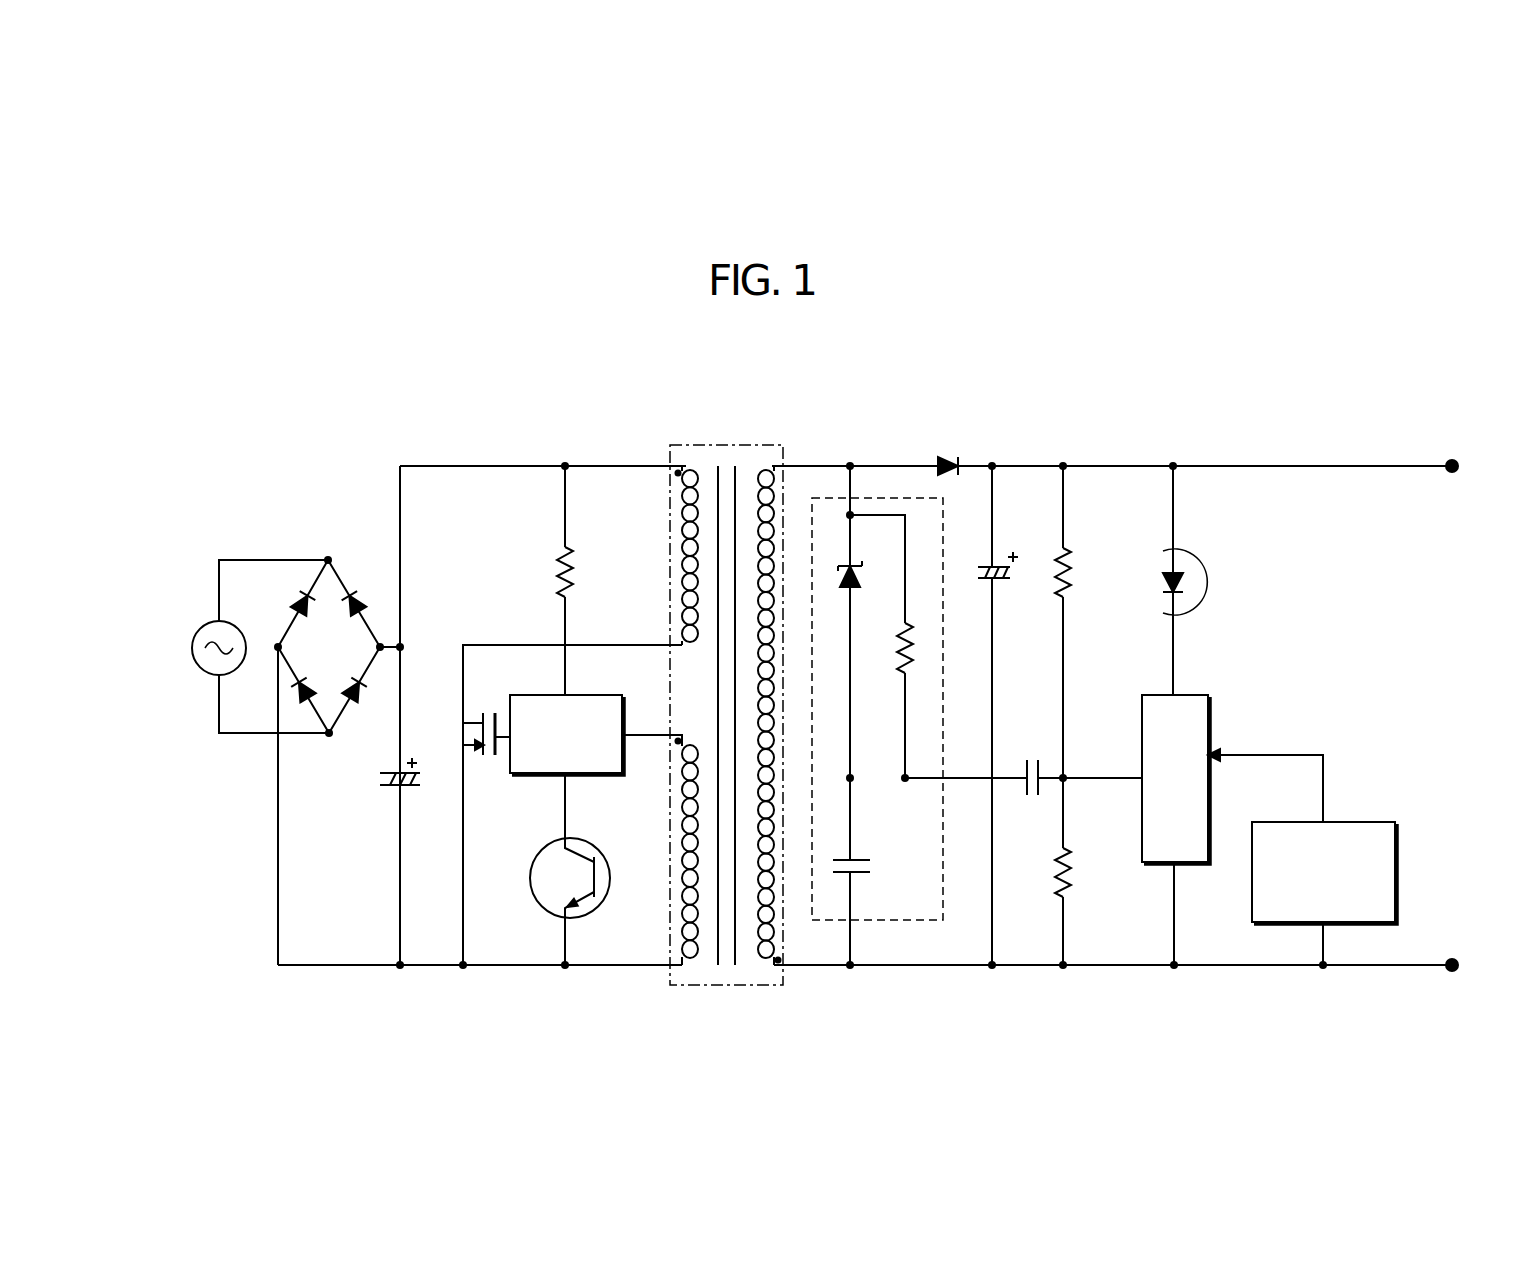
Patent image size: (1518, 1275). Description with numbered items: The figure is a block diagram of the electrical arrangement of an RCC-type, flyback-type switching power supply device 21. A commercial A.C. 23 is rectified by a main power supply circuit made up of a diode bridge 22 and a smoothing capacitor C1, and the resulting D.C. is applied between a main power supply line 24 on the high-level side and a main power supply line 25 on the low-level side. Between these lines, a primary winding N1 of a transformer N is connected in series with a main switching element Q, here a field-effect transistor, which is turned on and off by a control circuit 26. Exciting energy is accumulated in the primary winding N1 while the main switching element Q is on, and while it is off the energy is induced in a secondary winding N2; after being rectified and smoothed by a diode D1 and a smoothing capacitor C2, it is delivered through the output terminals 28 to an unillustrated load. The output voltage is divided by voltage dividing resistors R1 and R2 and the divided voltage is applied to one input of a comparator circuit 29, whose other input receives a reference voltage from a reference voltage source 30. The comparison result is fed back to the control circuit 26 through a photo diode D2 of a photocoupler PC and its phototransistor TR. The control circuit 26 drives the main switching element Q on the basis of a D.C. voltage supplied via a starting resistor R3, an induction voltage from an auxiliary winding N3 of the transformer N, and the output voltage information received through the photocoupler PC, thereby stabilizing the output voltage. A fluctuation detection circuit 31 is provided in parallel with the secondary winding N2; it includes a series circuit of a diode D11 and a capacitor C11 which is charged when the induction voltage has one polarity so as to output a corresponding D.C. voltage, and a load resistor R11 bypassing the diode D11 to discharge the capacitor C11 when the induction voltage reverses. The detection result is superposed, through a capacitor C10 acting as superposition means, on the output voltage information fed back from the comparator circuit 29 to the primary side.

The switching power supply device 21 is at (285, 436).
The diode bridge 22 is at (360, 524).
The commercial A.C. 23 is at (208, 621).
The main power supply line 24 is at (598, 464).
The main power supply line 25 is at (603, 966).
The control circuit 26 is at (603, 695).
The output terminal 28 is at (1452, 473).
The comparator circuit 29 is at (1212, 723).
The reference voltage source 30 is at (1396, 873).
The fluctuation detection circuit 31 is at (877, 498).
The transformer N is at (725, 445).
The primary winding N1 is at (682, 549).
The secondary winding N2 is at (776, 974).
The auxiliary winding N3 is at (682, 796).
The main switching element Q is at (490, 712).
The starting resistor R3 is at (556, 564).
The voltage dividing resistor R1 is at (1073, 558).
The voltage dividing resistor R2 is at (1076, 856).
The load resistor R11 is at (900, 628).
The smoothing capacitor C1 is at (380, 783).
The smoothing capacitor C2 is at (975, 565).
The capacitor C10 is at (1028, 760).
The capacitor C11 is at (868, 860).
The diode D1 is at (955, 462).
The photo diode D2 is at (1163, 584).
The diode D11 is at (862, 575).
The photocoupler PC is at (530, 882).
The phototransistor TR is at (600, 881).